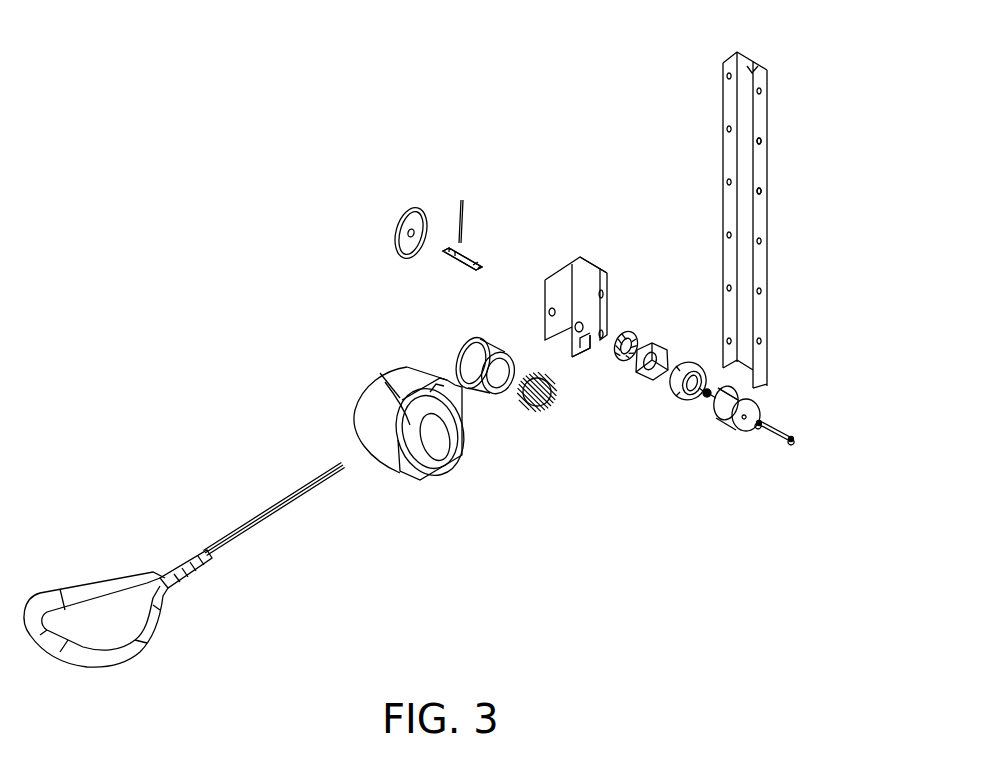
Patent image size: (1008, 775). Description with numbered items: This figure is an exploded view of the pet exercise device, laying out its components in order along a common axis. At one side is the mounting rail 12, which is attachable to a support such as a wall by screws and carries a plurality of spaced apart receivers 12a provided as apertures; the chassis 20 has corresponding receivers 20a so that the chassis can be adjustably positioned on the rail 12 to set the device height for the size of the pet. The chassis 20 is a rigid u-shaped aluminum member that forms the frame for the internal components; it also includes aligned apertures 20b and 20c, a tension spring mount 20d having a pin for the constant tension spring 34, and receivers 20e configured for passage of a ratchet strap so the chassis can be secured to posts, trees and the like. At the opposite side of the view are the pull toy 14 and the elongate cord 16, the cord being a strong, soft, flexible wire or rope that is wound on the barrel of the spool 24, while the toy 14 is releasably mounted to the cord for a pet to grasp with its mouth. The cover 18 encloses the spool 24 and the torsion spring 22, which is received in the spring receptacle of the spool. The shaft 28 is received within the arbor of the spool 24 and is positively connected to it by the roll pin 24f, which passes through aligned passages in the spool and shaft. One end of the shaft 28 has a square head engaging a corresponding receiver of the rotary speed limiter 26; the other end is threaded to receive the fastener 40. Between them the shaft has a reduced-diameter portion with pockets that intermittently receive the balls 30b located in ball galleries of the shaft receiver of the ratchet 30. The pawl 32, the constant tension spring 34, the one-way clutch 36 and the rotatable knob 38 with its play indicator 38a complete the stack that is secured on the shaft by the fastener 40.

The mounting rail 12 is at (772, 237).
The receivers 12a is at (755, 141).
The pull toy 14 is at (164, 622).
The cord 16 is at (264, 513).
The cover 18 is at (392, 364).
The chassis 20 is at (597, 262).
The receivers 20a is at (604, 330).
The aperture 20b is at (548, 307).
The aperture 20c is at (574, 322).
The tension spring mount 20d is at (584, 360).
The receivers 20e is at (602, 330).
The torsion spring 22 is at (537, 408).
The spool 24 is at (476, 396).
The roll pin 24f is at (464, 203).
The rotary speed limiter 26 is at (400, 218).
The shaft 28 is at (446, 248).
The ratchet 30 is at (648, 382).
The balls 30b is at (480, 250).
The pawl 32 is at (622, 360).
The constant tension spring 34 is at (682, 400).
The one-way clutch 36 is at (707, 400).
The rotatable knob 38 is at (733, 440).
The play indicator 38a is at (742, 405).
The fastener 40 is at (796, 438).